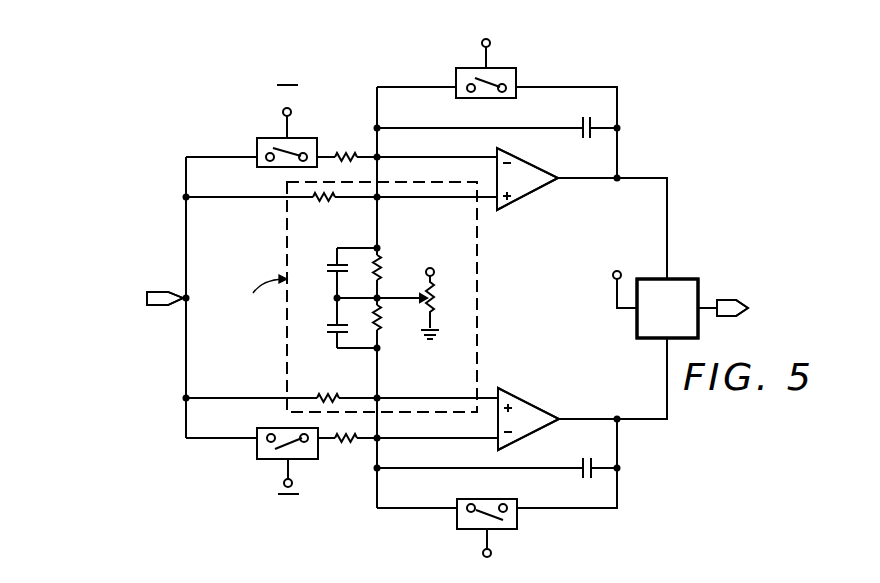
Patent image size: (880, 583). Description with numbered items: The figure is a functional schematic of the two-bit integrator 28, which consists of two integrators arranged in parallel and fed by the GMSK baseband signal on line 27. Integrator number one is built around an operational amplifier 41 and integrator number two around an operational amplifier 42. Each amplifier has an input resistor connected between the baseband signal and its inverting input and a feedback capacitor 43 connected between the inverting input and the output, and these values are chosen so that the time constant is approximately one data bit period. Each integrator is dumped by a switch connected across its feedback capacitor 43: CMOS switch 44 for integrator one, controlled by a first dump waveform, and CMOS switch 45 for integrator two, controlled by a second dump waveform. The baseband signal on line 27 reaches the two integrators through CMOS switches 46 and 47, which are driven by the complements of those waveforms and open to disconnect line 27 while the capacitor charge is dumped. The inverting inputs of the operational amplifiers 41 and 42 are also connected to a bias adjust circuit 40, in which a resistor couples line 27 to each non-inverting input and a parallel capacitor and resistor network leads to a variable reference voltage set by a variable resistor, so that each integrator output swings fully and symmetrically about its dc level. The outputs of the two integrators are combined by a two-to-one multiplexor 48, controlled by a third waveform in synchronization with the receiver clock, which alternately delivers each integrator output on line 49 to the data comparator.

The line 27 is at (165, 290).
The two-bit integrator 28 is at (645, 140).
The bias adjust circuit 40 is at (287, 367).
The operational amplifier 41 is at (529, 197).
The operational amplifier 42 is at (532, 400).
The feedback capacitor 43 is at (586, 108).
The CMOS switch 44 is at (518, 74).
The CMOS switch 45 is at (517, 522).
The CMOS switch 46 is at (257, 146).
The CMOS switch 47 is at (257, 450).
The 2-to-1 multiplexor 48 is at (676, 279).
The line 49 is at (734, 298).